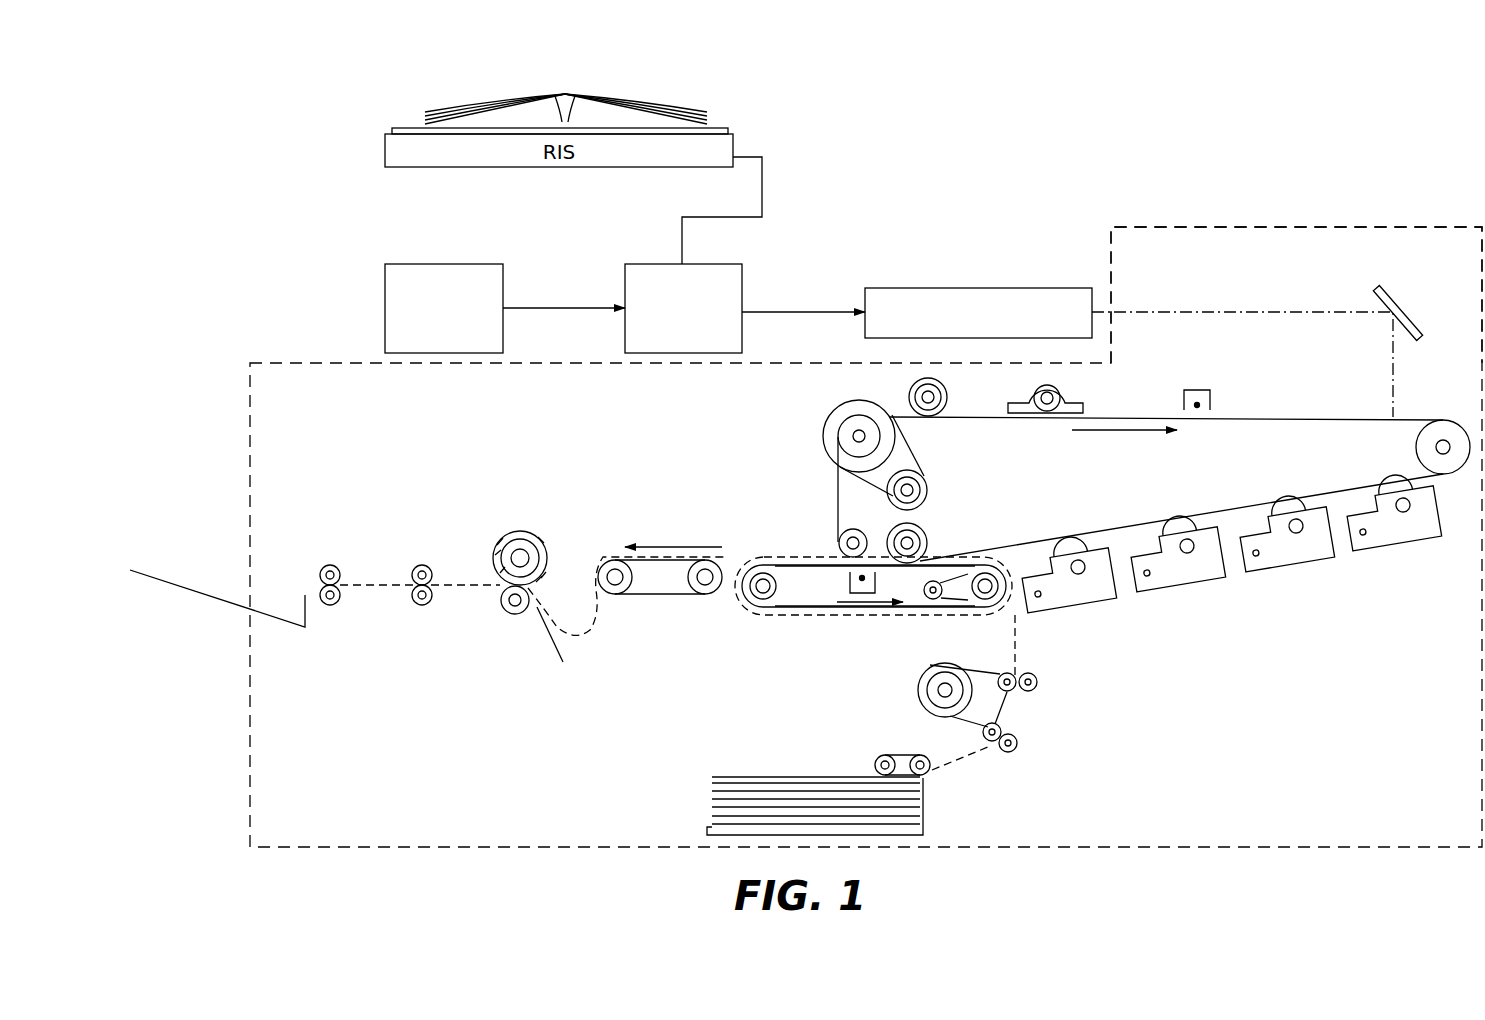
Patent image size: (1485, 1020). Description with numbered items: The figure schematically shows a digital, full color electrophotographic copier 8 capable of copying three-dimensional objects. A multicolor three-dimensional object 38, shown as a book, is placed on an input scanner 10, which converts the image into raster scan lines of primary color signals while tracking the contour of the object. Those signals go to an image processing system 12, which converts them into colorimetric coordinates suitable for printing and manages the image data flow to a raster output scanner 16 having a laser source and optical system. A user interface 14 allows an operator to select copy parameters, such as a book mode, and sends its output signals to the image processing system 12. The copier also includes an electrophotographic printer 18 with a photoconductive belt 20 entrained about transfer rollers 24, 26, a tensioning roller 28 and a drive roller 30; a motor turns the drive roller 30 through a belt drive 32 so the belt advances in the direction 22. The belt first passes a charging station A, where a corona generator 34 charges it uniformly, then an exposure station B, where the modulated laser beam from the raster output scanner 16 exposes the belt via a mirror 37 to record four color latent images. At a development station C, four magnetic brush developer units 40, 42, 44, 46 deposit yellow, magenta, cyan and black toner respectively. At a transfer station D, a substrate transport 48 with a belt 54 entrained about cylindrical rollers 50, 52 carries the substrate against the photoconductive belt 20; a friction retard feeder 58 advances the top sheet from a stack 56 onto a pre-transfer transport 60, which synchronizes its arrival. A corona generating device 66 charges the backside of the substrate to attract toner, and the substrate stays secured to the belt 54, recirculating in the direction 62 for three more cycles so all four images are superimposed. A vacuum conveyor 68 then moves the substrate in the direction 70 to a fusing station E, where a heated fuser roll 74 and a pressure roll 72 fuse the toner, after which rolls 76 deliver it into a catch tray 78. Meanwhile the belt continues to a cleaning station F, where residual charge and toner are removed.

The copier 8 is at (1217, 150).
The input scanner 10 is at (355, 110).
The image processing system 12 is at (652, 264).
The user interface 14 is at (440, 264).
The raster output scanner 16 is at (918, 282).
The electrophotographic printer 18 is at (1453, 227).
The photoconductive belt 20 is at (1296, 417).
The direction of belt advancement 22 is at (1105, 435).
The transfer roller 24 is at (838, 549).
The transfer roller 26 is at (930, 536).
The tensioning roller 28 is at (1416, 448).
The drive roller 30 is at (843, 430).
The belt drive 32 is at (930, 480).
The corona generator 34 is at (1215, 405).
The mirror 37 is at (1402, 306).
The three-dimensional object 38 is at (655, 122).
The developer unit 40 is at (1397, 540).
The developer unit 42 is at (1290, 560).
The developer unit 44 is at (1178, 580).
The developer unit 46 is at (1083, 595).
The substrate transport 48 is at (838, 628).
The cylindrical roller 50 is at (758, 600).
The cylindrical roller 52 is at (985, 606).
The belt 54 is at (782, 560).
The stack 56 is at (783, 775).
The friction retard feeder 58 is at (905, 755).
The pre-transfer transport 60 is at (1015, 716).
The direction of recirculating path 62 is at (857, 608).
The corona generating device 66 is at (848, 580).
The vacuum conveyor 68 is at (665, 598).
The direction of conveyor advancement 70 is at (678, 545).
The pressure roll 72 is at (503, 612).
The heated fuser roll 74 is at (518, 528).
The rolls 76 is at (322, 565).
The catch tray 78 is at (268, 620).
The charging station A is at (1175, 400).
The exposure station B is at (1385, 412).
The development station C is at (1255, 645).
The transfer station D is at (878, 545).
The fusing station E is at (505, 525).
The cleaning station F is at (1043, 425).